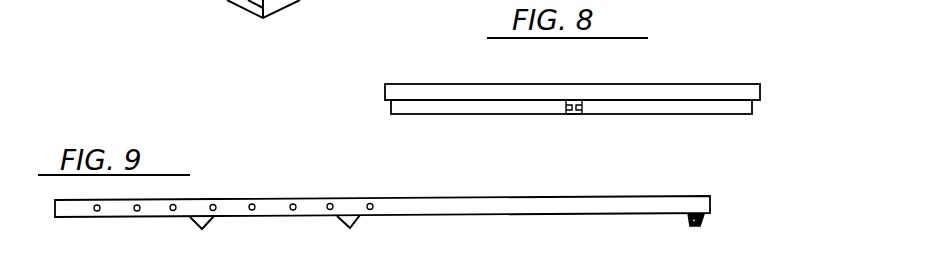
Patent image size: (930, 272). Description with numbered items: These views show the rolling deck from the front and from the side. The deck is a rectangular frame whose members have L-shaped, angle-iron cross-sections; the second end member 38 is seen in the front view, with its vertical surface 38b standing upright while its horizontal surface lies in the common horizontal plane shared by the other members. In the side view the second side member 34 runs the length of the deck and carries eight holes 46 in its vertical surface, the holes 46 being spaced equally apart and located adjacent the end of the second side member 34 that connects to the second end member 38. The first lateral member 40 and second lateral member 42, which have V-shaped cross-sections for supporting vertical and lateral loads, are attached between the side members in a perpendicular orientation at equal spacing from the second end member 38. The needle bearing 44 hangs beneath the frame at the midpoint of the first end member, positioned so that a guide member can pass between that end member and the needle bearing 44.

In FIG. 9, the second side member 34 is at (512, 215).
In FIG. 8, the second end member 38 is at (403, 86).
In FIG. 8, the vertical surface 38b is at (127, 11).
In FIG. 9, the first lateral member 40 is at (355, 220).
In FIG. 8, the second lateral member 42 is at (652, 116).
In FIG. 9, the second lateral member 42 is at (193, 222).
In FIG. 8, the needle bearing 44 is at (575, 116).
In FIG. 9, the needle bearing 44 is at (700, 227).
In FIG. 8, the holes 46 is at (300, 1).
In FIG. 9, the holes 46 is at (96, 211).